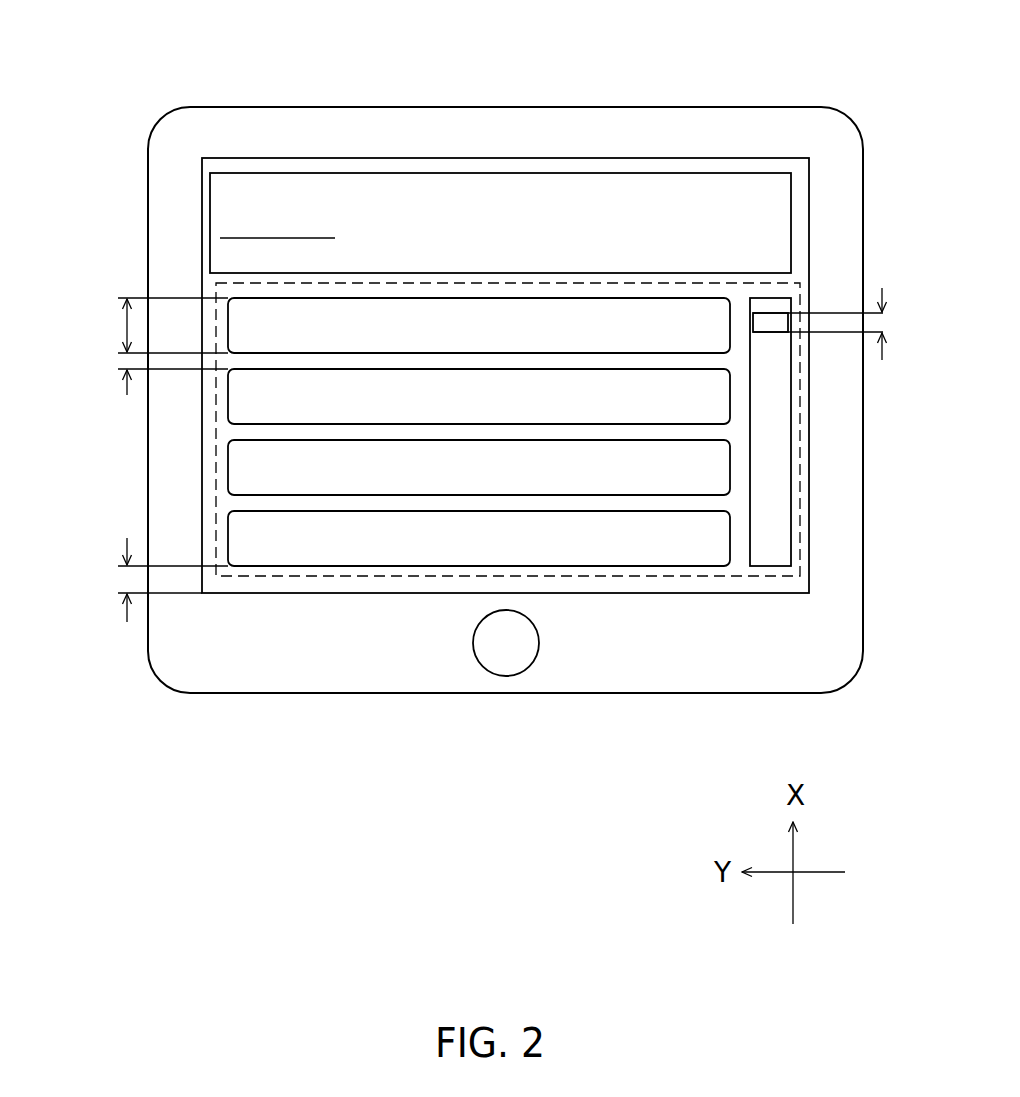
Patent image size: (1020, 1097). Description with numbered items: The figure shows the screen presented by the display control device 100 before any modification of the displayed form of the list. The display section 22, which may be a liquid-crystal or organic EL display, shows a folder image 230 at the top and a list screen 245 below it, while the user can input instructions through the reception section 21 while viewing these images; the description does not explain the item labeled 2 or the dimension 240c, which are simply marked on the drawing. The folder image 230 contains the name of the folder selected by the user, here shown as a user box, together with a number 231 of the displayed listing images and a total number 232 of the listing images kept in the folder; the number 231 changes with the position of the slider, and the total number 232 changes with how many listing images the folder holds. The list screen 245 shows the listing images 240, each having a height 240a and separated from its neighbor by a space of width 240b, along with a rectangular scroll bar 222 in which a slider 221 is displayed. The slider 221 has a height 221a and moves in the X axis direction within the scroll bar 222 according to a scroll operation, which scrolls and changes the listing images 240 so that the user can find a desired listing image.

The display control device 100 is at (613, 103).
The display 2 is at (505, 457).
The reception section 21 is at (505, 457).
The display section 22 is at (349, 585).
The folder image 230 is at (312, 172).
The number of displayed listing images 231 is at (728, 230).
The total number of listing images 232 is at (764, 223).
The list screen 245 is at (803, 578).
The listing images 240 is at (250, 296).
The height of listing images 240a is at (127, 330).
The width of space between adjacent listing images 240b is at (127, 361).
The bottom margin 240c is at (127, 581).
The scroll bar 222 is at (792, 422).
The slider 221 is at (772, 318).
The height of slider 221a is at (853, 324).